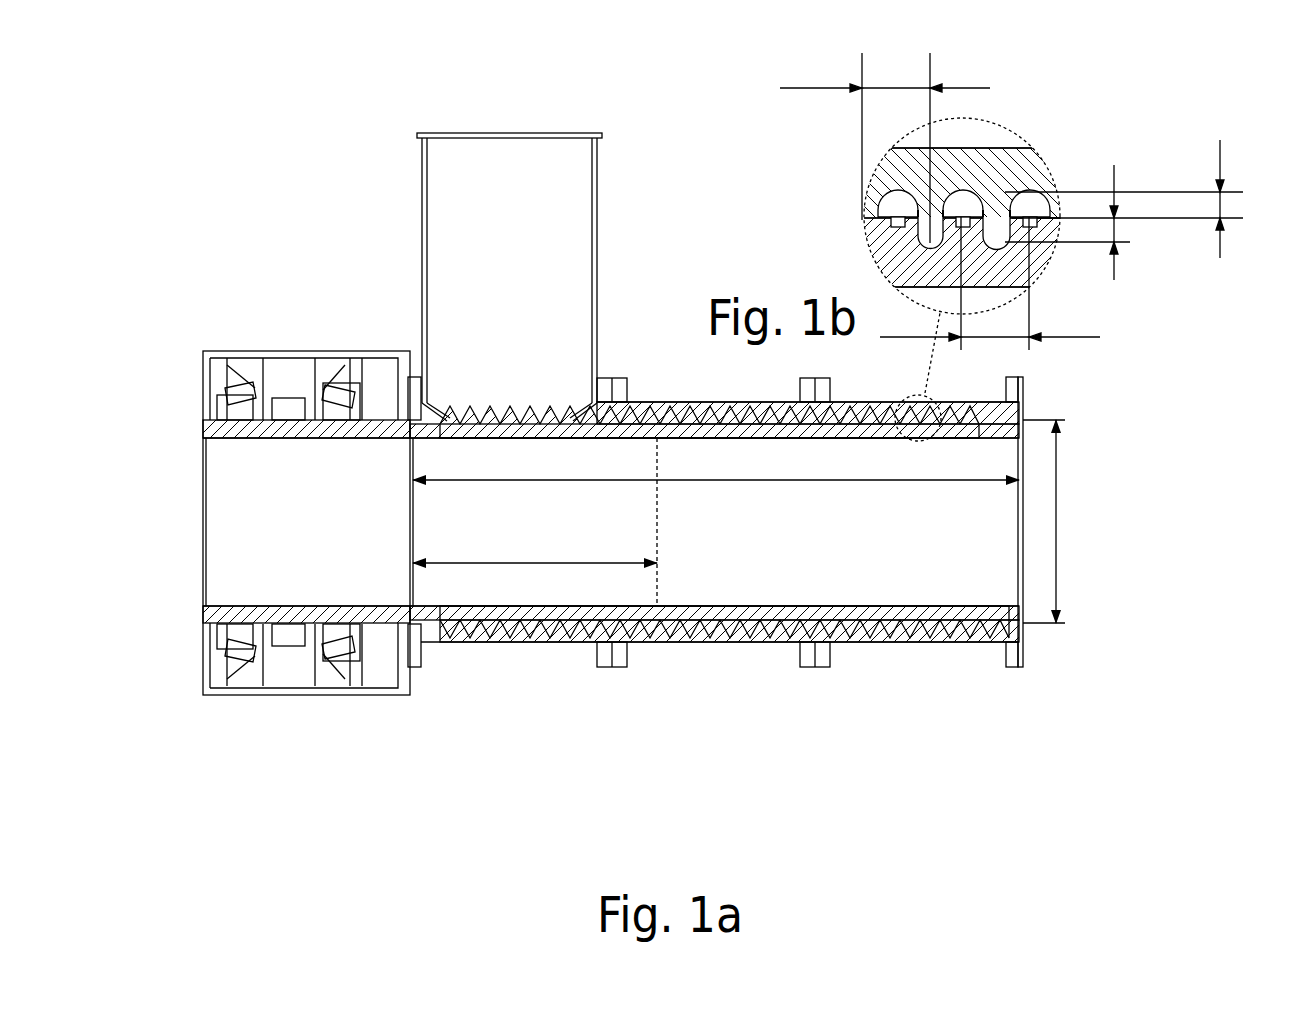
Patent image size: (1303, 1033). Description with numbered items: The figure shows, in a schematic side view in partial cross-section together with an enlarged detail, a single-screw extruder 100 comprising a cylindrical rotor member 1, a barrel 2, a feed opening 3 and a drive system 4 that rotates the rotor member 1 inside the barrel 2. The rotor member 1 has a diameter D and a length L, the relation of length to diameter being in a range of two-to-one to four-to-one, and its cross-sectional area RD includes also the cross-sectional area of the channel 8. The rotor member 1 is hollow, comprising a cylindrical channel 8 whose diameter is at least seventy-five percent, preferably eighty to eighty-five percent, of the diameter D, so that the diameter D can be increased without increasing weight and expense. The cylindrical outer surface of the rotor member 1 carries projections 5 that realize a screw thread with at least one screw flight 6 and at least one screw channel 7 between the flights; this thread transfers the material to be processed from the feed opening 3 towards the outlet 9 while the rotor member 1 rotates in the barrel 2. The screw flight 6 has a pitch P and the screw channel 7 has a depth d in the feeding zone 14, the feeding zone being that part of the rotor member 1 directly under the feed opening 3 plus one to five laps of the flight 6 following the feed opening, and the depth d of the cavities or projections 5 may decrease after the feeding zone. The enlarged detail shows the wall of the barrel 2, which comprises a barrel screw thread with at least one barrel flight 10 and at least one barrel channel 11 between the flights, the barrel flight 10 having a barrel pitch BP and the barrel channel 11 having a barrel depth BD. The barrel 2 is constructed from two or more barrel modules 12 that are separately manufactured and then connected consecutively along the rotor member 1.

In FIG. 1a, the rotor member 1 is at (810, 613).
In FIG. 1b, the rotor member 1 is at (890, 265).
In FIG. 1a, the barrel 2 is at (767, 644).
In FIG. 1b, the barrel 2 is at (883, 185).
In FIG. 1a, the feed opening 3 is at (457, 358).
In FIG. 1a, the drive system 4 is at (287, 333).
In FIG. 1a, the projections 5 is at (520, 687).
In FIG. 1b, the projections 5 is at (1085, 155).
In FIG. 1b, the screw flight 6 is at (898, 227).
In FIG. 1b, the screw channel 7 is at (1010, 230).
In FIG. 1a, the channel 8 is at (724, 546).
In FIG. 1a, the outlet 9 is at (1125, 480).
In FIG. 1b, the barrel flight 10 is at (937, 213).
In FIG. 1b, the barrel channel 11 is at (967, 205).
In FIG. 1a, the barrel module 12 is at (582, 720).
In FIG. 1a, the feeding zone 14 is at (535, 542).
In FIG. 1a, the extruder 100 is at (1160, 867).
In FIG. 1a, the length L is at (716, 522).
In FIG. 1a, the diameter D is at (1061, 521).
In FIG. 1a, the cross-sectional area of the rotor member RD is at (1106, 563).
In FIG. 1b, the pitch P is at (990, 283).
In FIG. 1b, the barrel pitch BP is at (885, 143).
In FIG. 1b, the barrel depth BD is at (1145, 199).
In FIG. 1b, the depth d is at (1075, 225).